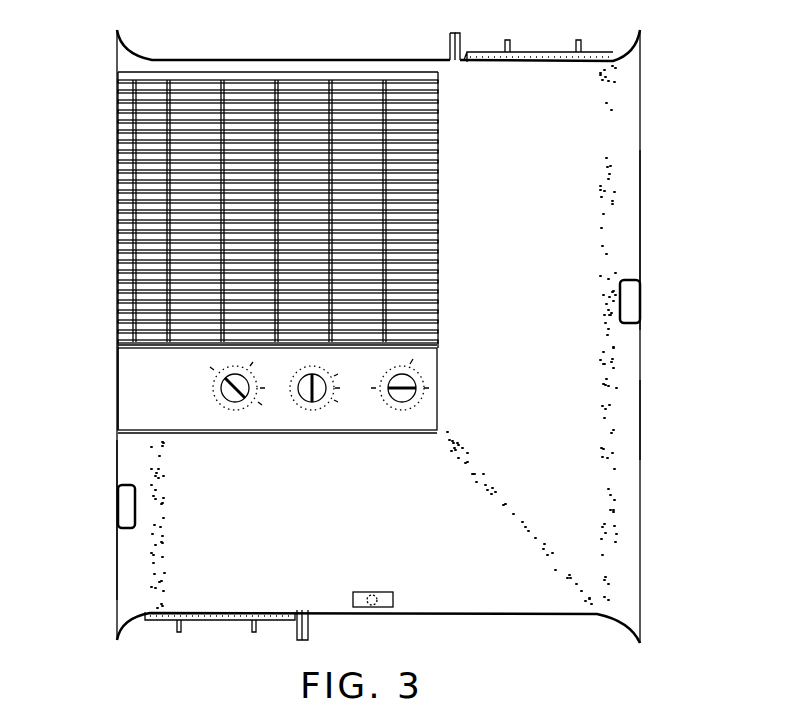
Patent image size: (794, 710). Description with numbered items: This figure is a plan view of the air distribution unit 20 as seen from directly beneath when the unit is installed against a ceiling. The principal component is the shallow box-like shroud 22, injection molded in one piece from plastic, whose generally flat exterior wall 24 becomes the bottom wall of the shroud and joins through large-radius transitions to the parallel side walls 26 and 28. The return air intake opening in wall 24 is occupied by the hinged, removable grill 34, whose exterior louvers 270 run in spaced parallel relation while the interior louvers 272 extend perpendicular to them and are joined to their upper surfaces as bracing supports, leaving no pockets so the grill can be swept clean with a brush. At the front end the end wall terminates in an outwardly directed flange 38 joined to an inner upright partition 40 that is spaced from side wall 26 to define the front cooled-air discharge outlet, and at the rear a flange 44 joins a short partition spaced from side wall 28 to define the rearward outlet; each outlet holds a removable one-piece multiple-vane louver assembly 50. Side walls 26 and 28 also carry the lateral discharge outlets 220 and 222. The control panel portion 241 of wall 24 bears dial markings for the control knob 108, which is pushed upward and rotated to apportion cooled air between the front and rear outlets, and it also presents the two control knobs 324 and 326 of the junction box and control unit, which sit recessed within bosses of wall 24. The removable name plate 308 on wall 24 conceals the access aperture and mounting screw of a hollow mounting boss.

The air distribution unit 20 is at (104, 35).
The shroud 22 is at (641, 206).
The exterior wall 24 is at (584, 386).
The side wall 26 is at (637, 424).
The side wall 28 is at (118, 455).
The grill 34 is at (116, 206).
The flange 38 is at (450, 40).
The inner upright partition 40 is at (460, 38).
The flange 44 is at (309, 633).
The louver assembly 50 is at (533, 50).
The control knob 108 is at (395, 405).
The lateral discharge outlet 220 is at (636, 286).
The lateral discharge outlet 222 is at (125, 520).
The control panel portion 241 is at (253, 428).
The exterior louvers 270 is at (118, 285).
The interior louvers 272 is at (133, 337).
The name plate 308 is at (380, 593).
The control knob 324 is at (233, 403).
The control knob 326 is at (318, 408).